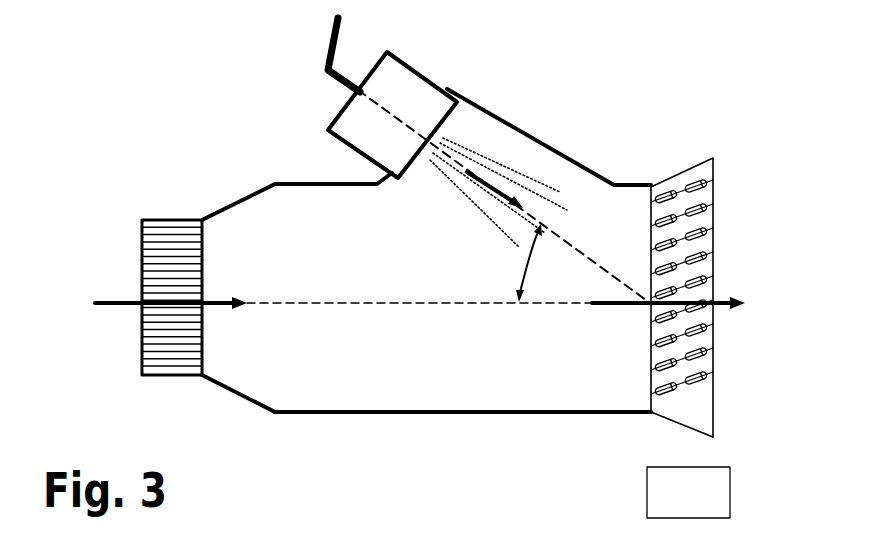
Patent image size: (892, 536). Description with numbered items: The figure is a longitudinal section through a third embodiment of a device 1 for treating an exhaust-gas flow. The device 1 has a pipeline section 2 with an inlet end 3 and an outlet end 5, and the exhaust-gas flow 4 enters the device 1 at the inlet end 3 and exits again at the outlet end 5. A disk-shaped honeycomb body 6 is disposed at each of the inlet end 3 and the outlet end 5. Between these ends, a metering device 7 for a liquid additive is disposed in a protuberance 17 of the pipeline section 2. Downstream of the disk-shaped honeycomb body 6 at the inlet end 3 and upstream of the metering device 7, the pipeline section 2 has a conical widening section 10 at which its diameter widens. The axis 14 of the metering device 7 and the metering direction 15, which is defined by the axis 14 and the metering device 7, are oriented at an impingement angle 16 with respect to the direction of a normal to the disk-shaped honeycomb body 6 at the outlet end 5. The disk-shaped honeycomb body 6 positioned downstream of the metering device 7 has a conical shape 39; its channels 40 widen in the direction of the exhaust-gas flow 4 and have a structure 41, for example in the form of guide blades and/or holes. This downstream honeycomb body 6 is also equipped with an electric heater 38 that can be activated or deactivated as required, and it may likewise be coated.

The device 1 is at (100, 137).
The pipeline section 2 is at (570, 413).
The inlet end 3 is at (138, 380).
The exhaust-gas flow 4 is at (117, 300).
The outlet end 5 is at (713, 415).
The disk-shaped honeycomb body 6 is at (188, 230).
The metering device 7 is at (443, 90).
The widening section 10 is at (212, 400).
The axis 14 is at (567, 250).
The metering direction 15 is at (497, 185).
The impingement angle 16 is at (530, 258).
The protuberance 17 is at (535, 152).
The electric heater 38 is at (688, 427).
The conical shape 39 is at (657, 187).
The channels 40 is at (703, 335).
The structure 41 is at (697, 187).